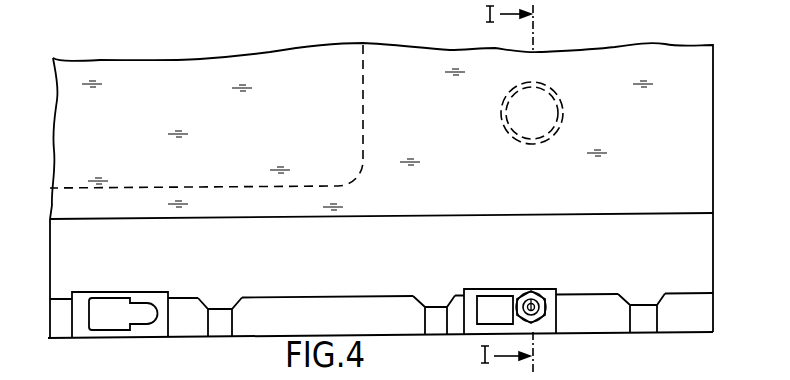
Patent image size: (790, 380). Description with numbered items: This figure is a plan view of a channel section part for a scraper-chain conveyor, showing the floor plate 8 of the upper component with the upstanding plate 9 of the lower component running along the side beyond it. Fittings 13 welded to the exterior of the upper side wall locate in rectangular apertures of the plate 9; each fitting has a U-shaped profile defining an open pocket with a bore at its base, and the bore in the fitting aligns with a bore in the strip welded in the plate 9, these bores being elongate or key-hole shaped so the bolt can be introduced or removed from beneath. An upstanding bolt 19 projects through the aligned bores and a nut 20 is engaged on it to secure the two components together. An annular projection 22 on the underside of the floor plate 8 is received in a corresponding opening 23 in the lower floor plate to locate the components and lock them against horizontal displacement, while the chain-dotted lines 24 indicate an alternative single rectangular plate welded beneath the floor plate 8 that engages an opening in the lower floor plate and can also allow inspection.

The floor plate 8 is at (437, 118).
The upstanding plate 9 is at (256, 323).
The fitting 13 is at (165, 294).
The bolt 19 is at (536, 291).
The nut 20 is at (550, 290).
The projection 22 is at (521, 132).
The opening 23 is at (561, 119).
The chain-dotted lines 24 is at (363, 88).